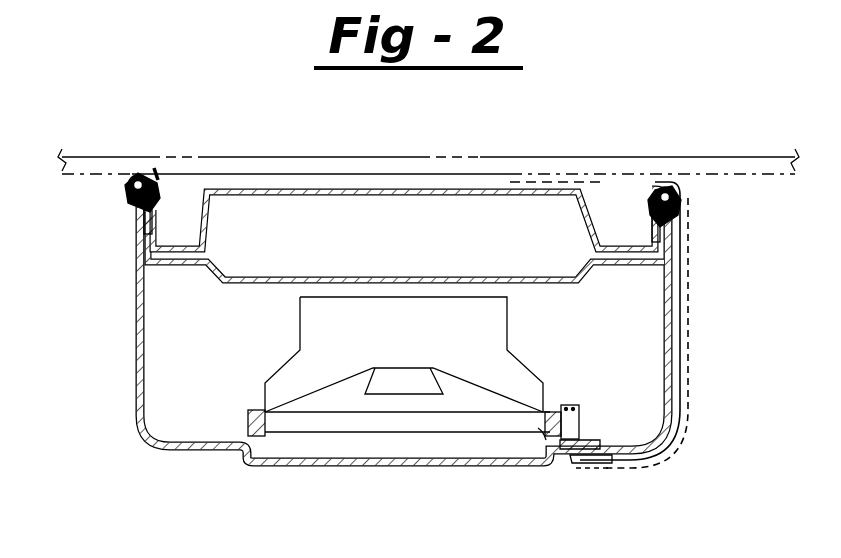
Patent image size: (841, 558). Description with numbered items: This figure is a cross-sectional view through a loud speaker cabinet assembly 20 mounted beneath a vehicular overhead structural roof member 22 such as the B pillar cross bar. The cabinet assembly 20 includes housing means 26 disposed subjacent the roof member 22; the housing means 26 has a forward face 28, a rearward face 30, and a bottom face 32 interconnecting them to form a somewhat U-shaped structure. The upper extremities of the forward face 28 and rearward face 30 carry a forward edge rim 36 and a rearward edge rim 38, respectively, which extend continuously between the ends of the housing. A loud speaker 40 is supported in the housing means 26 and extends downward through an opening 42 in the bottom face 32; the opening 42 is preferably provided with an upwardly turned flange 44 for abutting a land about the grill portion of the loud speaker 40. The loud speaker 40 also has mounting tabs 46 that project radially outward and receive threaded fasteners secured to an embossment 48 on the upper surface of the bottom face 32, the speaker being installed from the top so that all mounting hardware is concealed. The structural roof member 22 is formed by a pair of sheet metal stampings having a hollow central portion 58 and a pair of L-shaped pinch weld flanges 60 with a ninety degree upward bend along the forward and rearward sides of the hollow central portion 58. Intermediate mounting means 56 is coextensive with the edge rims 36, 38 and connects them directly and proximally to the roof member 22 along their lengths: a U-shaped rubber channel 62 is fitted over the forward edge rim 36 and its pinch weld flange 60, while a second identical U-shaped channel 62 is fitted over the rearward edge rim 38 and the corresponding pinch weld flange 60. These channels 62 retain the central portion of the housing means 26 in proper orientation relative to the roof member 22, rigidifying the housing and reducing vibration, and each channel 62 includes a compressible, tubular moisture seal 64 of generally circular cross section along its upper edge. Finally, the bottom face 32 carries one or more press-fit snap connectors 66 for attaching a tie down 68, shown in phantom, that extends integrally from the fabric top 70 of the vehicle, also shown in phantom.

The loud speaker cabinet assembly 20 is at (397, 360).
The structural roof member 22 is at (212, 193).
The housing means 26 is at (397, 360).
The forward face 28 is at (397, 360).
The rearward face 30 is at (673, 327).
The bottom face 32 is at (463, 360).
The forward edge rim 36 is at (127, 201).
The rearward edge rim 38 is at (682, 220).
The loud speaker 40 is at (463, 360).
The opening 42 is at (546, 442).
The upwardly turned flange 44 is at (248, 424).
The mounting tabs 46 is at (566, 408).
The embossment 48 is at (580, 432).
The intermediate mounting means 56 is at (158, 170).
The hollow central portion 58 is at (420, 195).
The pinch weld flanges 60 is at (155, 244).
The U-shaped rubber channel 62 is at (128, 210).
The compressible moisture seal 64 is at (134, 180).
The press-fit snap connectors 66 is at (598, 464).
The tie down 68 is at (690, 394).
The fabric top 70 is at (748, 160).